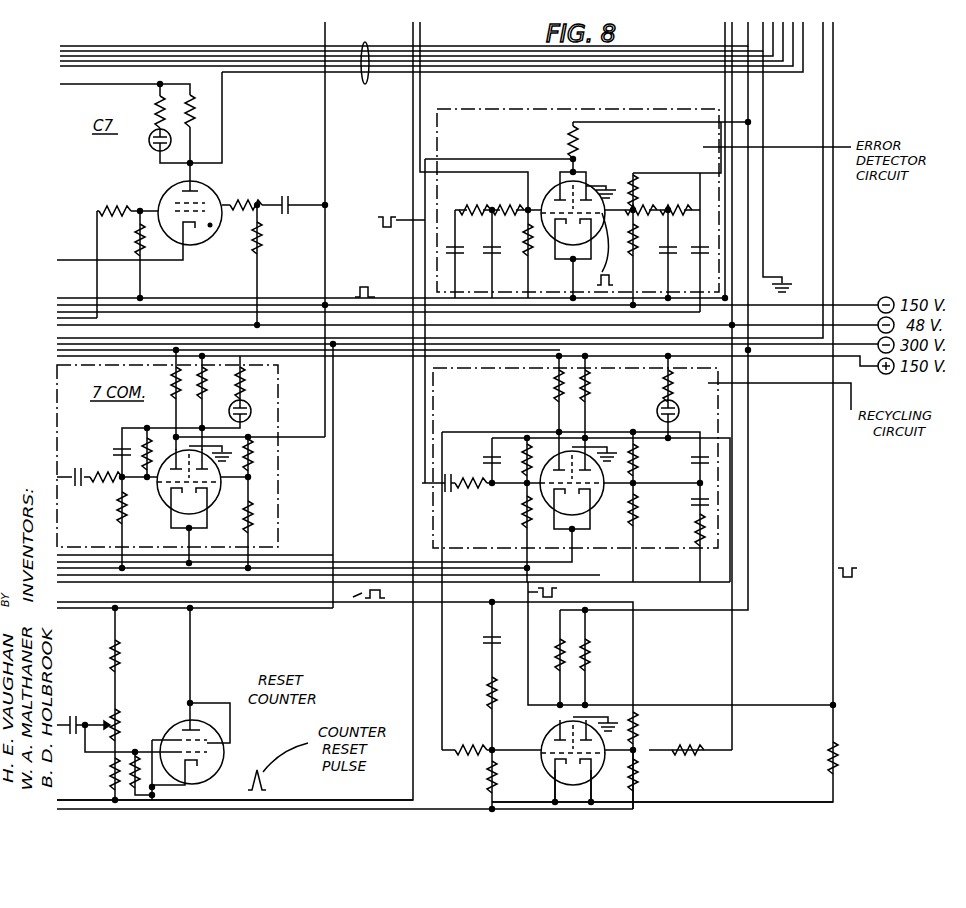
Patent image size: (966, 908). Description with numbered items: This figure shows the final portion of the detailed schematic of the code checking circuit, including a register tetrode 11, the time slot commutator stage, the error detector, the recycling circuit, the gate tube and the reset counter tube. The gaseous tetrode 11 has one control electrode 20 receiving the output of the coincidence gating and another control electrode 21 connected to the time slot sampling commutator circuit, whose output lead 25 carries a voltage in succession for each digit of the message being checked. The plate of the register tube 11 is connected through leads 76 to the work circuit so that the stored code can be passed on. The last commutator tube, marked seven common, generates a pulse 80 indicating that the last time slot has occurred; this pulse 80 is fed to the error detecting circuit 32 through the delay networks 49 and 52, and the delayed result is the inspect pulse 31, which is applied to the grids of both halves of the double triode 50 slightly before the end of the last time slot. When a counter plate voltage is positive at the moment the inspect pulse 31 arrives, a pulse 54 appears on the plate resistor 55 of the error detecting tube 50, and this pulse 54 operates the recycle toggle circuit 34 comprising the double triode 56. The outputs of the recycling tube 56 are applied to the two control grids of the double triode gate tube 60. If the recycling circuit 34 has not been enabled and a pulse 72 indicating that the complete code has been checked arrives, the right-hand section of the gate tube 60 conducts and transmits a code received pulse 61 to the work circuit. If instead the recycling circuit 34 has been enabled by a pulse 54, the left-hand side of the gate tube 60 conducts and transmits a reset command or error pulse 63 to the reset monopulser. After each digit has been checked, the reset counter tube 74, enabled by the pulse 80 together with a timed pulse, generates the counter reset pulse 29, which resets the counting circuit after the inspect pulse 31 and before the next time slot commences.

The gaseous tetrode 11 is at (214, 197).
The control electrode 21 is at (173, 200).
The control electrode 20 is at (208, 215).
The leads 76 is at (363, 84).
The pulse 54 is at (389, 214).
The pulse 80 is at (357, 287).
The error detecting circuit 32 is at (763, 190).
The delay circuit 49 is at (470, 217).
The double triode tube 50 is at (553, 190).
The plate resistor 55 is at (580, 139).
The delay circuit 52 is at (688, 229).
The inspect pulse 31 is at (613, 280).
The output lead 25 is at (299, 440).
The recycling circuit 34 is at (762, 416).
The double triode 56 is at (598, 495).
The error pulse 63 is at (557, 592).
The code received pulse 61 is at (857, 573).
The pulse 72 is at (375, 605).
The reset counter tube 74 is at (178, 722).
The counter reset pulse 29 is at (263, 788).
The double triode gate tube 60 is at (555, 741).